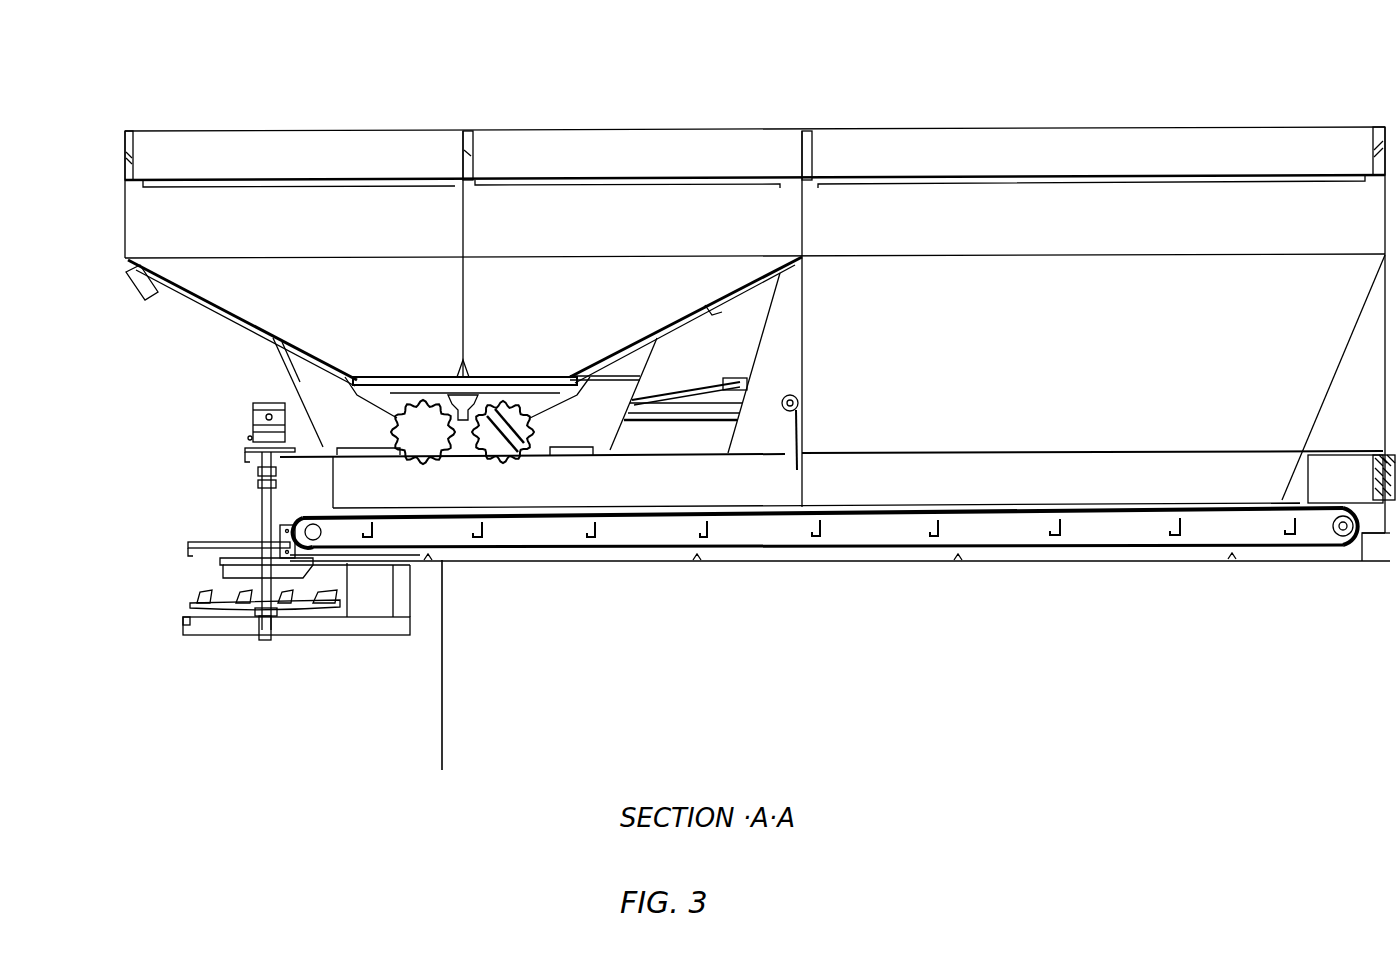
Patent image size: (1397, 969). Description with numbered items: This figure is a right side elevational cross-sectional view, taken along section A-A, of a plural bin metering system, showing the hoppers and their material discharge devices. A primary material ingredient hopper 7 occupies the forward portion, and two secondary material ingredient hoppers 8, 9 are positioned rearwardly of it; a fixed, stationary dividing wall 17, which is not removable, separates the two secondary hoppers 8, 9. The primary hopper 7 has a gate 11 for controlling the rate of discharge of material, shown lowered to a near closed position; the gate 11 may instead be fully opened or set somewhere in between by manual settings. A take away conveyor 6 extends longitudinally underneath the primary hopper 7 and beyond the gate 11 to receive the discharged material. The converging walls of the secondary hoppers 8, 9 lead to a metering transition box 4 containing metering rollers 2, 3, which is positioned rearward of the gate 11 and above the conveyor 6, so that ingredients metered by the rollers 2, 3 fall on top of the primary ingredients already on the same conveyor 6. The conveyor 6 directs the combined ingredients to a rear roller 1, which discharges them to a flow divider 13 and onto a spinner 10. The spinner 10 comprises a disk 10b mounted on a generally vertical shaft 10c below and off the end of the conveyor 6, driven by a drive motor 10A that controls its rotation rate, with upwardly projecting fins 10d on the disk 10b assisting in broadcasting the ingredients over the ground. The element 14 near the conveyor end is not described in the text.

The rear roller 1 is at (280, 527).
The metering roller 2 is at (496, 400).
The metering roller 3 is at (428, 427).
The metering transition box 4 is at (340, 385).
The take away conveyor 6 is at (540, 525).
The primary material ingredient hopper 7 is at (1083, 218).
The secondary material ingredient hopper 8 is at (613, 220).
The secondary material ingredient hopper 9 is at (313, 225).
The spinner 10 is at (255, 622).
The drive motor 10A is at (248, 412).
The disk 10b is at (292, 625).
The shaft 10c is at (260, 530).
The fin 10d is at (200, 593).
The gate 11 is at (792, 412).
The flow divider 13 is at (240, 573).
The belt pulley 14 is at (1340, 540).
The dividing wall 17 is at (466, 246).